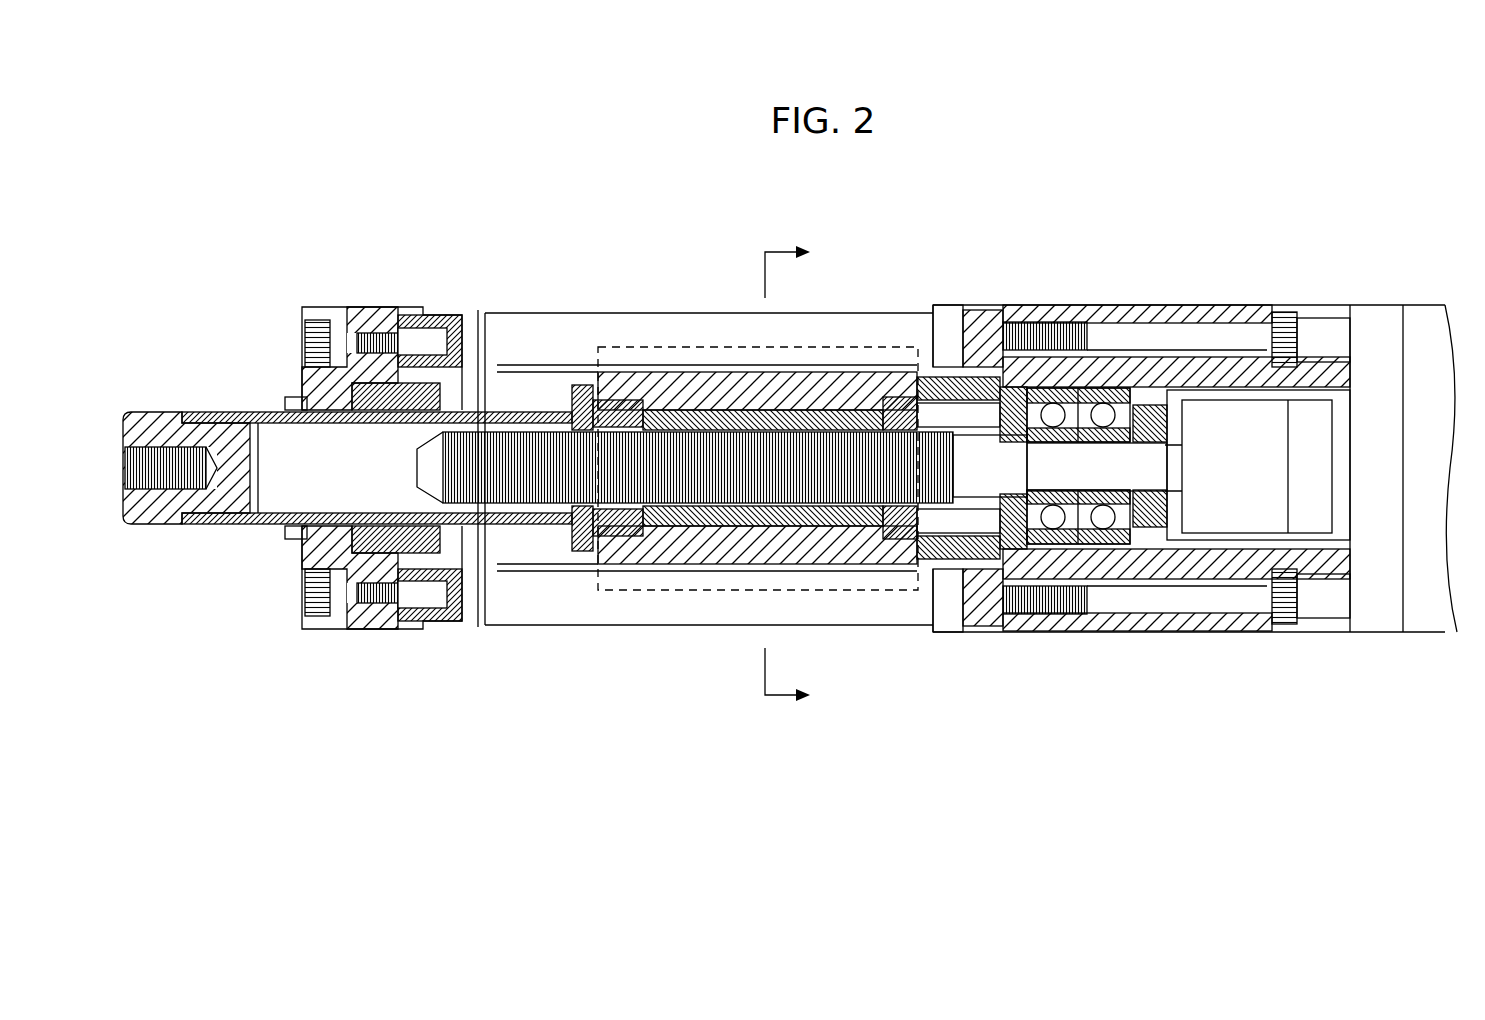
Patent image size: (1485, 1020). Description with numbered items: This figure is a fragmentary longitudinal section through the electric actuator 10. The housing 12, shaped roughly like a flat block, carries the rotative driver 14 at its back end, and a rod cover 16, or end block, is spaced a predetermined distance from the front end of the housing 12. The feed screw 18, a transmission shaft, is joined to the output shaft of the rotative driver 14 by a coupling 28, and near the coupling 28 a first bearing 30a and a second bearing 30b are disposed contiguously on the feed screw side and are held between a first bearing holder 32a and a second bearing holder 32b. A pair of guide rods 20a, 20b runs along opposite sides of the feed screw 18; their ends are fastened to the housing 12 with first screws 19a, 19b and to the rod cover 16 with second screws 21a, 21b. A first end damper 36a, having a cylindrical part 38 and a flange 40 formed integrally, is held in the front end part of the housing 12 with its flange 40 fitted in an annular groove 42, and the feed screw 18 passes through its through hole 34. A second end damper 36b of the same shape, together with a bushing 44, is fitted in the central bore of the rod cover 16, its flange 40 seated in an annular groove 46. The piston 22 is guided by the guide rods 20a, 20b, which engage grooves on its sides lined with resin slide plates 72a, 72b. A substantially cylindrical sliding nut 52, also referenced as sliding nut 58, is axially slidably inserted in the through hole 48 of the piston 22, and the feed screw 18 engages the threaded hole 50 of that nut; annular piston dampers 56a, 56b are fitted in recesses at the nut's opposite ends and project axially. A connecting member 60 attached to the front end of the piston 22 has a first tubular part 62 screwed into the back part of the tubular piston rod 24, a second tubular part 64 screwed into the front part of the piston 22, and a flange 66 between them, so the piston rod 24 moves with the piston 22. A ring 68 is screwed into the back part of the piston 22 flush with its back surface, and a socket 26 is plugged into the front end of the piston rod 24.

The electric actuator 10 is at (971, 175).
The housing 12 is at (1160, 298).
The rotative driver 14 is at (1420, 332).
The rod cover 16 is at (300, 640).
The feed screw 18 is at (692, 506).
The first screw 19a is at (1215, 350).
The first screw 19b is at (1205, 600).
The guide rod 20a is at (912, 330).
The guide rod 20b is at (906, 600).
The second screw 21a is at (398, 345).
The second screw 21b is at (398, 616).
The piston 22 is at (682, 372).
The tubular piston rod 24 is at (258, 527).
The socket 26 is at (138, 415).
The coupling 28 is at (1228, 400).
The first bearing 30a is at (1056, 400).
The second bearing 30b is at (1106, 400).
The first bearing holder 32a is at (1022, 335).
The second bearing holder 32b is at (1130, 590).
The through hole 34 is at (396, 630).
The first end damper 36a is at (937, 385).
The second end damper 36b is at (418, 325).
The cylindrical part 38 is at (441, 600).
The flange 40 is at (345, 627).
The annular groove 42 is at (993, 312).
The bushing 44 is at (292, 538).
The annular groove 46 is at (390, 340).
The through hole 48 is at (838, 530).
The threaded hole 50 is at (790, 530).
The sliding nut 52 is at (727, 412).
The piston damper 56a is at (618, 402).
The piston damper 56b is at (868, 366).
The sliding nut 58 is at (572, 388).
The connecting member 60 is at (573, 578).
The first tubular part 62 is at (545, 535).
The second tubular part 64 is at (655, 566).
The flange 66 is at (618, 548).
The ring 68 is at (905, 566).
The slide plate 72a is at (786, 345).
The slide plate 72b is at (799, 473).